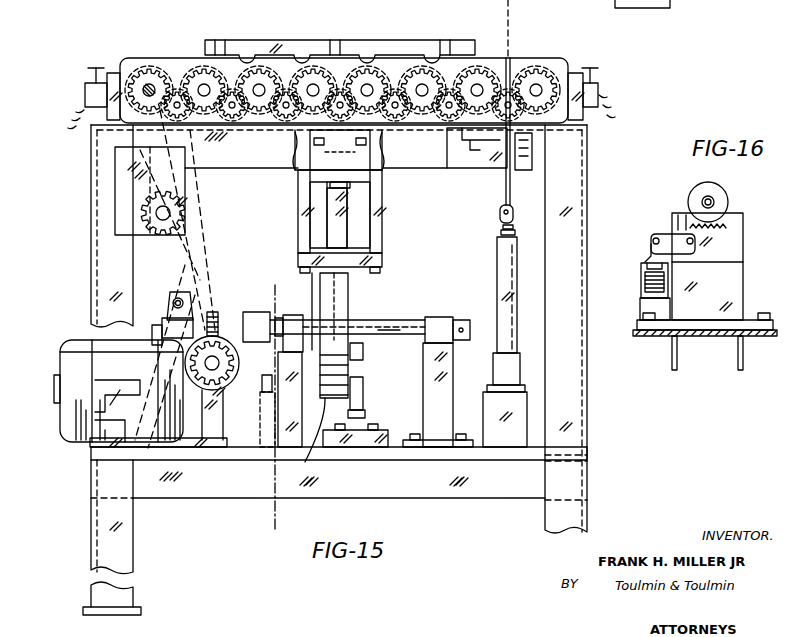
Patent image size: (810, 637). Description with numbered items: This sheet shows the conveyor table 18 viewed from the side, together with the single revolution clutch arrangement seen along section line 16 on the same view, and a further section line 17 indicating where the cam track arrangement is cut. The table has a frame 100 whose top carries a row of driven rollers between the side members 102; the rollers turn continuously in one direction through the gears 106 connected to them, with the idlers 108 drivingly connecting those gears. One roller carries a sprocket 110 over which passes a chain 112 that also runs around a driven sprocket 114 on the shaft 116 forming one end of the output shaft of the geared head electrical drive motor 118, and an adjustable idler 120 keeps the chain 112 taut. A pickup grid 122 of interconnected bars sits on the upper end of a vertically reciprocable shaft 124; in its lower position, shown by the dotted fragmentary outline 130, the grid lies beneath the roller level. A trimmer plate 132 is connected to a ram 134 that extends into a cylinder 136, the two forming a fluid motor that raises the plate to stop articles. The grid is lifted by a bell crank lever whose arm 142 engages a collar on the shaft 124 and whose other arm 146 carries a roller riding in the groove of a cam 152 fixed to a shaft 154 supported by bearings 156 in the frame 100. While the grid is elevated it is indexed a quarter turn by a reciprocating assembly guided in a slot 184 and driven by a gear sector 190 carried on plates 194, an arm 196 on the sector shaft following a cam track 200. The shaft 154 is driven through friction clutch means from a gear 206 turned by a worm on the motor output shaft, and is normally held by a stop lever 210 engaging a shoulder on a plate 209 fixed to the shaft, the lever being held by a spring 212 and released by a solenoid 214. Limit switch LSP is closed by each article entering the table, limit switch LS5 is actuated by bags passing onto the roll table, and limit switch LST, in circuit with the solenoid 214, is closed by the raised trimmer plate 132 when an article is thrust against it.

In FIG. 15, the frame 100 is at (573, 140).
In FIG. 15, the side members 102 is at (132, 58).
In FIG. 15, the gears 106 is at (197, 80).
In FIG. 15, the idlers 108 is at (178, 111).
In FIG. 15, the sprocket 110 is at (143, 98).
In FIG. 15, the chain 112 is at (165, 158).
In FIG. 15, the driven sprocket 114 is at (205, 357).
In FIG. 15, the shaft 116 is at (265, 399).
In FIG. 15, the geared head electrical drive motor 118 is at (134, 374).
In FIG. 15, the adjustable idler 120 is at (140, 233).
In FIG. 15, the pickup grid 122 is at (256, 42).
In FIG. 15, the shaft 124 is at (355, 152).
In FIG. 15, the dotted fragmentary outline 130 is at (601, 4).
In FIG. 15, the trimmer plate 132 is at (530, 182).
In FIG. 15, the ram 134 is at (515, 222).
In FIG. 15, the cylinder 136 is at (497, 281).
In FIG. 15, the arm 142 is at (364, 356).
In FIG. 15, the arm 146 is at (364, 385).
In FIG. 15, the cam 152 is at (345, 303).
In FIG. 15, the shaft 154 is at (388, 326).
In FIG. 16, the shaft 154 is at (714, 202).
In FIG. 15, the bearings 156 is at (290, 318).
In FIG. 15, the slot 184 is at (350, 186).
In FIG. 15, the gear sector 190 is at (335, 224).
In FIG. 15, the plates 194 is at (310, 205).
In FIG. 15, the arm 196 is at (300, 265).
In FIG. 15, the cam track 200 is at (307, 439).
In FIG. 15, the gear 206 is at (212, 310).
In FIG. 16, the plate 209 is at (722, 190).
In FIG. 16, the stop lever 210 is at (680, 232).
In FIG. 16, the spring 212 is at (730, 233).
In FIG. 16, the solenoid 214 is at (641, 289).
In FIG. 15, the section line 16 is at (259, 289).
In FIG. 15, the section line 17 is at (317, 238).
In FIG. 15, the conveyor table 18 is at (164, 46).
In FIG. 15, the limit switch LSP is at (85, 97).
In FIG. 15, the limit switch LS5 is at (597, 90).
In FIG. 15, the limit switch LST is at (520, 173).